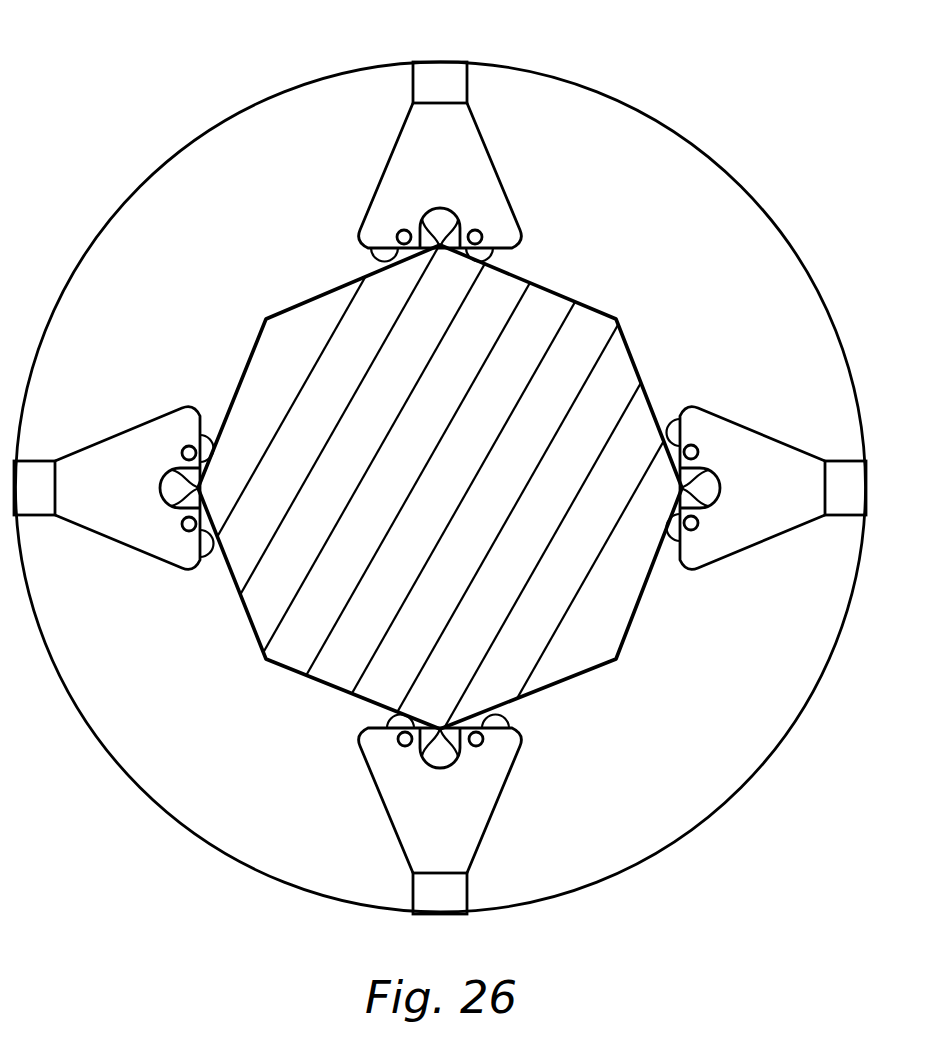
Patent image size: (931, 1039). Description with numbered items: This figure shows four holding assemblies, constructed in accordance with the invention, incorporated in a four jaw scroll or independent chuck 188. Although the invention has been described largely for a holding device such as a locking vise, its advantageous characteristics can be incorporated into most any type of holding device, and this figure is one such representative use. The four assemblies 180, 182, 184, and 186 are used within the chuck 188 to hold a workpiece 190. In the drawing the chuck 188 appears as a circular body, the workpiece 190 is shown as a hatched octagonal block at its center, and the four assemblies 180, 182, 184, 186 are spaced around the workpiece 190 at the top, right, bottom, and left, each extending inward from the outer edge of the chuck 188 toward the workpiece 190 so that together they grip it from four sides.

The assembly 180 is at (106, 430).
The assembly 182 is at (384, 151).
The assembly 184 is at (764, 553).
The assembly 186 is at (372, 801).
The four jaw scroll or independent chuck 188 is at (705, 147).
The workpiece 190 is at (583, 335).